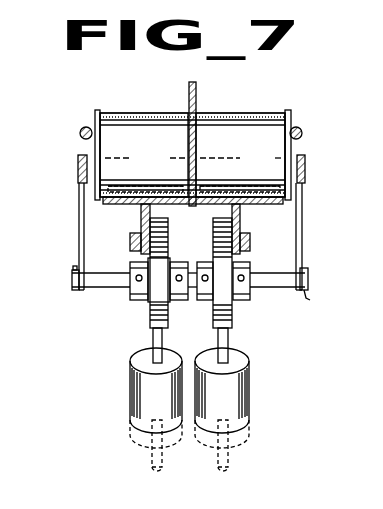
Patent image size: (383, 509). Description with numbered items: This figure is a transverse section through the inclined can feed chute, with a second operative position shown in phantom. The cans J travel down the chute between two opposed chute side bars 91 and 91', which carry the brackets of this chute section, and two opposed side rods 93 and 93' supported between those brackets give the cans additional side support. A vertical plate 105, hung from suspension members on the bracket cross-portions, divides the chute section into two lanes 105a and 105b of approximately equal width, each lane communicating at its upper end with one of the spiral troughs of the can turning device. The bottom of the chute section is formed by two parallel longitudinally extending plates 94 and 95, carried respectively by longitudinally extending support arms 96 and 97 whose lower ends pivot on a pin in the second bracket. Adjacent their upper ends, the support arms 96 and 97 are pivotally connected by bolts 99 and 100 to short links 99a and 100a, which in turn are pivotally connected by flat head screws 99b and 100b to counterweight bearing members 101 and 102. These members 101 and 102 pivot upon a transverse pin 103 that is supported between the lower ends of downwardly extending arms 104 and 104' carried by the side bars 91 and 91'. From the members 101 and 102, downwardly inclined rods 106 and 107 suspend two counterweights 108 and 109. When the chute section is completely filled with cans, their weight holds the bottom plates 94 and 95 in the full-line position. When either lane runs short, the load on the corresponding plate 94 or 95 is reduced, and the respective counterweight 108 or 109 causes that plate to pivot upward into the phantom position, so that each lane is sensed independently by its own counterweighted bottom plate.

The cans J is at (147, 129).
The chute side bar 91 is at (61, 169).
The chute side bar 91' is at (321, 169).
The side rod 93 is at (64, 135).
The side rod 93' is at (318, 134).
The plate 94 is at (118, 188).
The plate 95 is at (259, 188).
The support arm 96 is at (151, 206).
The support arm 97 is at (158, 240).
The bolt 99 is at (130, 235).
The short link 99a is at (138, 270).
The flat head screw 99b is at (188, 270).
The bolt 100 is at (250, 240).
The short link 100a is at (244, 272).
The flat head screw 100b is at (222, 270).
The counterweight bearing member 101 is at (149, 320).
The counterweight bearing member 102 is at (233, 318).
The transverse pin 103 is at (95, 288).
The downwardly extending arm 104 is at (53, 236).
The downwardly extending arm 104' is at (324, 236).
The vertical plate 105 is at (190, 150).
The lane 105a is at (127, 118).
The lane 105b is at (258, 118).
The downwardly inclined rod 106 is at (152, 338).
The downwardly inclined rod 107 is at (229, 338).
The counterweight 108 is at (150, 400).
The counterweight 109 is at (232, 398).